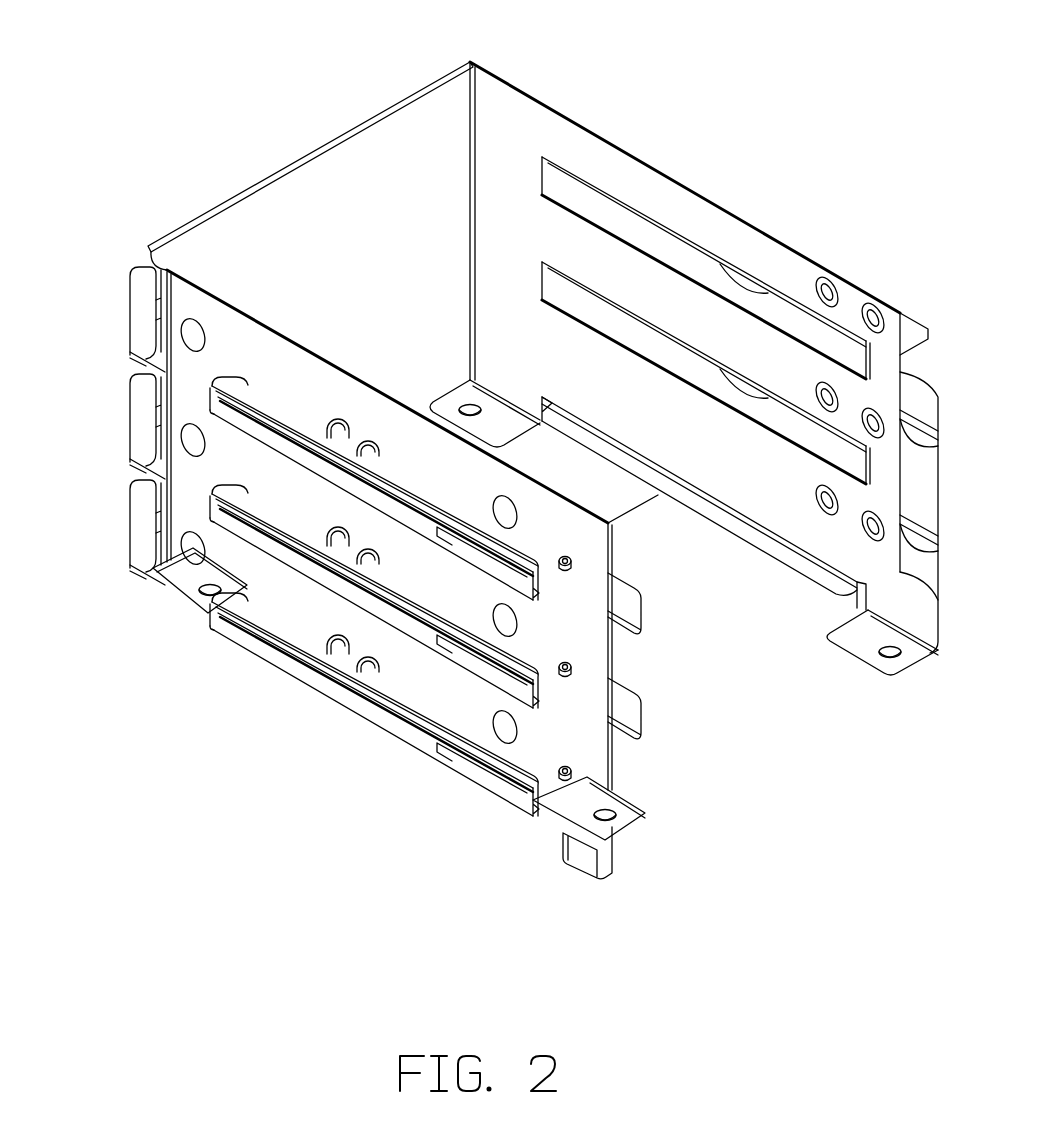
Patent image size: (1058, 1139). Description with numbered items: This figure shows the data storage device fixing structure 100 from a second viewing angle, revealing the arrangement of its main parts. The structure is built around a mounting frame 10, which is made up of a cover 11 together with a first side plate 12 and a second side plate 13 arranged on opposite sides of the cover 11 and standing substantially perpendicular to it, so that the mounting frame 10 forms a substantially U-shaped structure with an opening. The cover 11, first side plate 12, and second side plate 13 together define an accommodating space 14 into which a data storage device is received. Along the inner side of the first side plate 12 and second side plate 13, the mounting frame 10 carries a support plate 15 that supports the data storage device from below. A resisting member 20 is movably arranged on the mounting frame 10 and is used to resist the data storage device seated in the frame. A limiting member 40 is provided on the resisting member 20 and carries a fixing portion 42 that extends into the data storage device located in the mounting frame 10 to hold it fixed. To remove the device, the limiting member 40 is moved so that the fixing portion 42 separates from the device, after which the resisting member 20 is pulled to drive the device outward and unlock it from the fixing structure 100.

The data storage device fixing structure 100 is at (569, 28).
The mounting frame 10 is at (385, 86).
The cover 11 is at (344, 168).
The first side plate 12 is at (197, 366).
The second side plate 13 is at (658, 190).
The accommodating space 14 is at (272, 215).
The support plate 15 is at (257, 395).
The resisting member 20 is at (138, 517).
The limiting member 40 is at (628, 702).
The fixing portion 42 is at (575, 562).